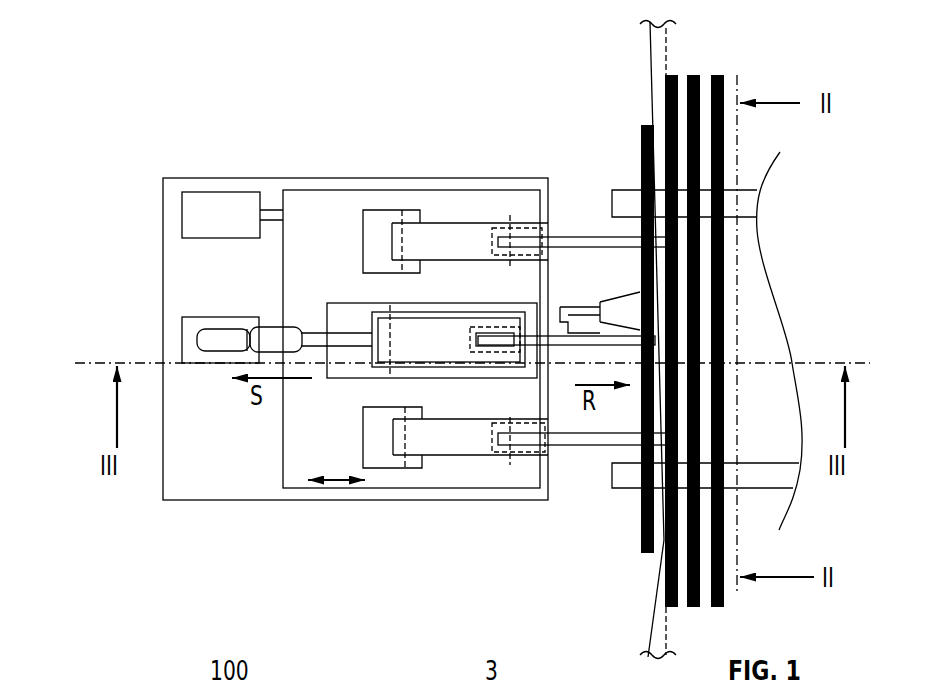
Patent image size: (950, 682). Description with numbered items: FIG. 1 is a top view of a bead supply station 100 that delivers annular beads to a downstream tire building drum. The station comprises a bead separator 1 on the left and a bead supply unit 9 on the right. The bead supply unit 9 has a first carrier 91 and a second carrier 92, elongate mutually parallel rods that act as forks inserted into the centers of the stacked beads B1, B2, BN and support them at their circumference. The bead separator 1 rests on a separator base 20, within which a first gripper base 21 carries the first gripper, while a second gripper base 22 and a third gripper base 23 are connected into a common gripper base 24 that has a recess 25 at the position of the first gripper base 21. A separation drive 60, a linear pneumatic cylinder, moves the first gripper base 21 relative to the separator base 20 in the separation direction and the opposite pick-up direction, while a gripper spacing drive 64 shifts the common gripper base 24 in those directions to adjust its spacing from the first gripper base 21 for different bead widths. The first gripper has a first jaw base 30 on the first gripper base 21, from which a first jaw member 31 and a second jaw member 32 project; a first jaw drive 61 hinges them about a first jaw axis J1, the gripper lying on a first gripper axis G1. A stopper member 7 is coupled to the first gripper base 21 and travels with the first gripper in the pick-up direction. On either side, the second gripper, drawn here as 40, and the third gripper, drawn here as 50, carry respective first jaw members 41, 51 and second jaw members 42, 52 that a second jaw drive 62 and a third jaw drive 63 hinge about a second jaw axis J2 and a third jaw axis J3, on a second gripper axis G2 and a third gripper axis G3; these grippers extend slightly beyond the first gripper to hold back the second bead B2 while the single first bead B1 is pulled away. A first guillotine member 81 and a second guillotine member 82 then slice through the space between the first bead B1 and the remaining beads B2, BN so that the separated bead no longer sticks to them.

The bead supply station 100 is at (130, 105).
The bead separator 1 is at (238, 110).
The separator base 20 is at (178, 485).
The common gripper base 24 is at (287, 448).
The recess 25 is at (350, 372).
The gripper spacing drive 64 is at (220, 205).
The separation drive 60 is at (223, 337).
The first gripper base 21 is at (373, 308).
The first jaw base 30 is at (448, 320).
The first gripper axis G1 is at (390, 340).
The first jaw axis J1 is at (480, 353).
The first jaw member 31 is at (566, 441).
The second jaw member 32 is at (557, 385).
The first jaw drive 61 is at (518, 290).
The stopper member 7 is at (618, 312).
The third gripper base 23 is at (383, 215).
The third gripper 50 is at (470, 197).
The third gripper axis G3 is at (402, 242).
The third jaw drive 63 is at (509, 184).
The third jaw axis J3 is at (509, 211).
The first jaw member 51 is at (583, 189).
The second jaw member 52 is at (582, 236).
The second gripper base 22 is at (387, 457).
The second gripper 40 is at (470, 482).
The second gripper axis G2 is at (424, 437).
The second jaw drive 62 is at (511, 487).
The second jaw axis J2 is at (518, 405).
The first jaw member 41 is at (583, 519).
The second jaw member 42 is at (658, 548).
The second guillotine member 82 is at (650, 55).
The first guillotine member 81 is at (660, 618).
The first bead B1 is at (638, 120).
The second bead B2 is at (668, 75).
The further bead(s) BN is at (720, 75).
The bead supply unit 9 is at (830, 172).
The second carrier 92 is at (752, 198).
The first carrier 91 is at (760, 480).